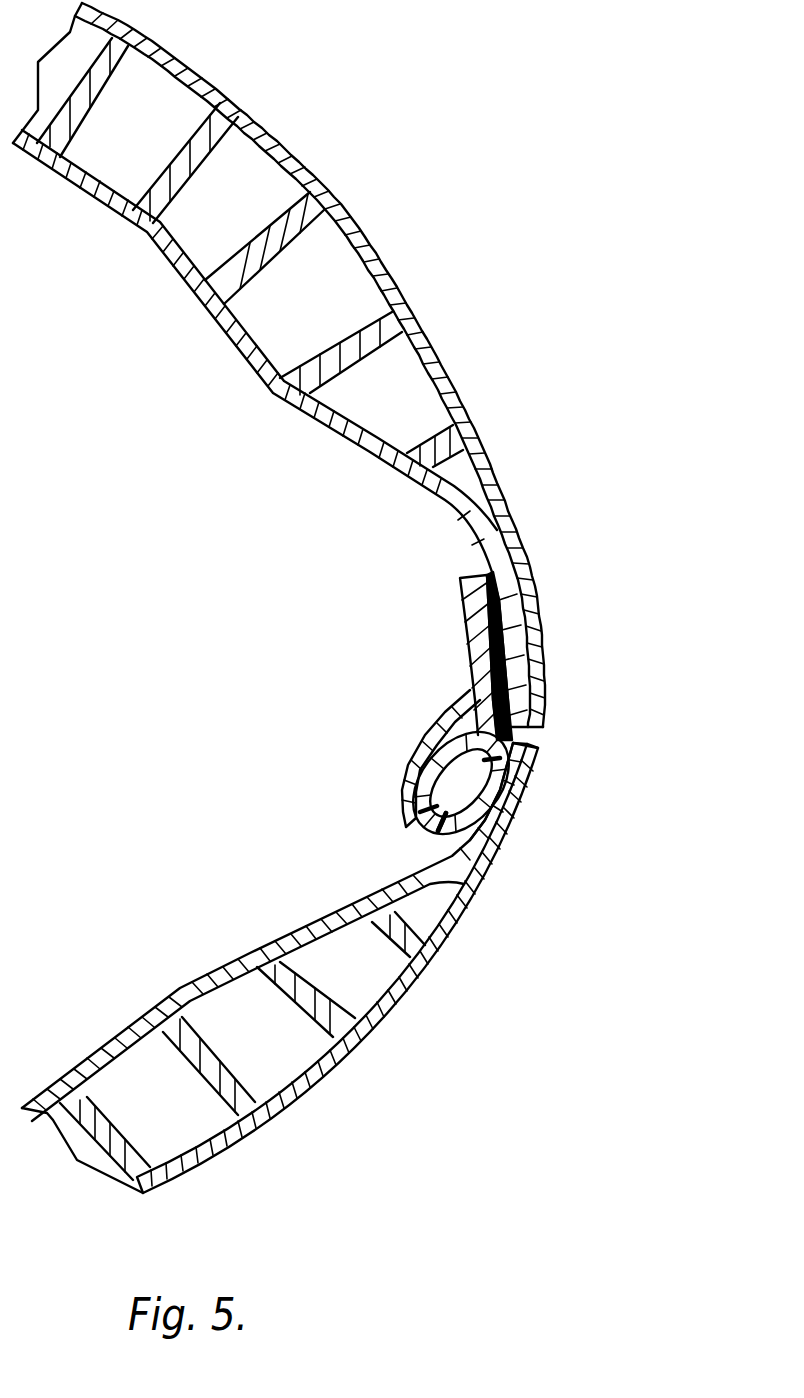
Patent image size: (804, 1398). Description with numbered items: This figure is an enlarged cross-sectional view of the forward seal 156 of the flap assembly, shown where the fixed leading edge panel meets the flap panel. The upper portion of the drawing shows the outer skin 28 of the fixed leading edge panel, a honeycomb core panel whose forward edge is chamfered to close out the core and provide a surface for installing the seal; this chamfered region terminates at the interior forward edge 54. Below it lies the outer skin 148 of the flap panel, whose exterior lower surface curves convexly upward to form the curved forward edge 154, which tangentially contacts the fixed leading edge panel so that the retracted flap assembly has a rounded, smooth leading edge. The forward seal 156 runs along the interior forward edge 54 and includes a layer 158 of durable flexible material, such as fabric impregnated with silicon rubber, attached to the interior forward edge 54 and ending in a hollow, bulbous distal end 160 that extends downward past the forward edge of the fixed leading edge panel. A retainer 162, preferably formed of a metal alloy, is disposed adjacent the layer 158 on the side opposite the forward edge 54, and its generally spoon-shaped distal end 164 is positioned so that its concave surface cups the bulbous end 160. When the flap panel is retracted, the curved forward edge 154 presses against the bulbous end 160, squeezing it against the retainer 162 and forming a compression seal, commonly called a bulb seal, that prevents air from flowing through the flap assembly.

The outer skin 28 is at (308, 157).
The interior forward edge 54 is at (543, 703).
The outer skin 148 is at (413, 978).
The curved forward edge 154 is at (532, 773).
The forward seal 156 is at (380, 742).
The layer 158 is at (484, 568).
The bulbous distal end 160 is at (437, 830).
The retainer 162 is at (465, 630).
The spoon-shaped distal end 164 is at (400, 797).